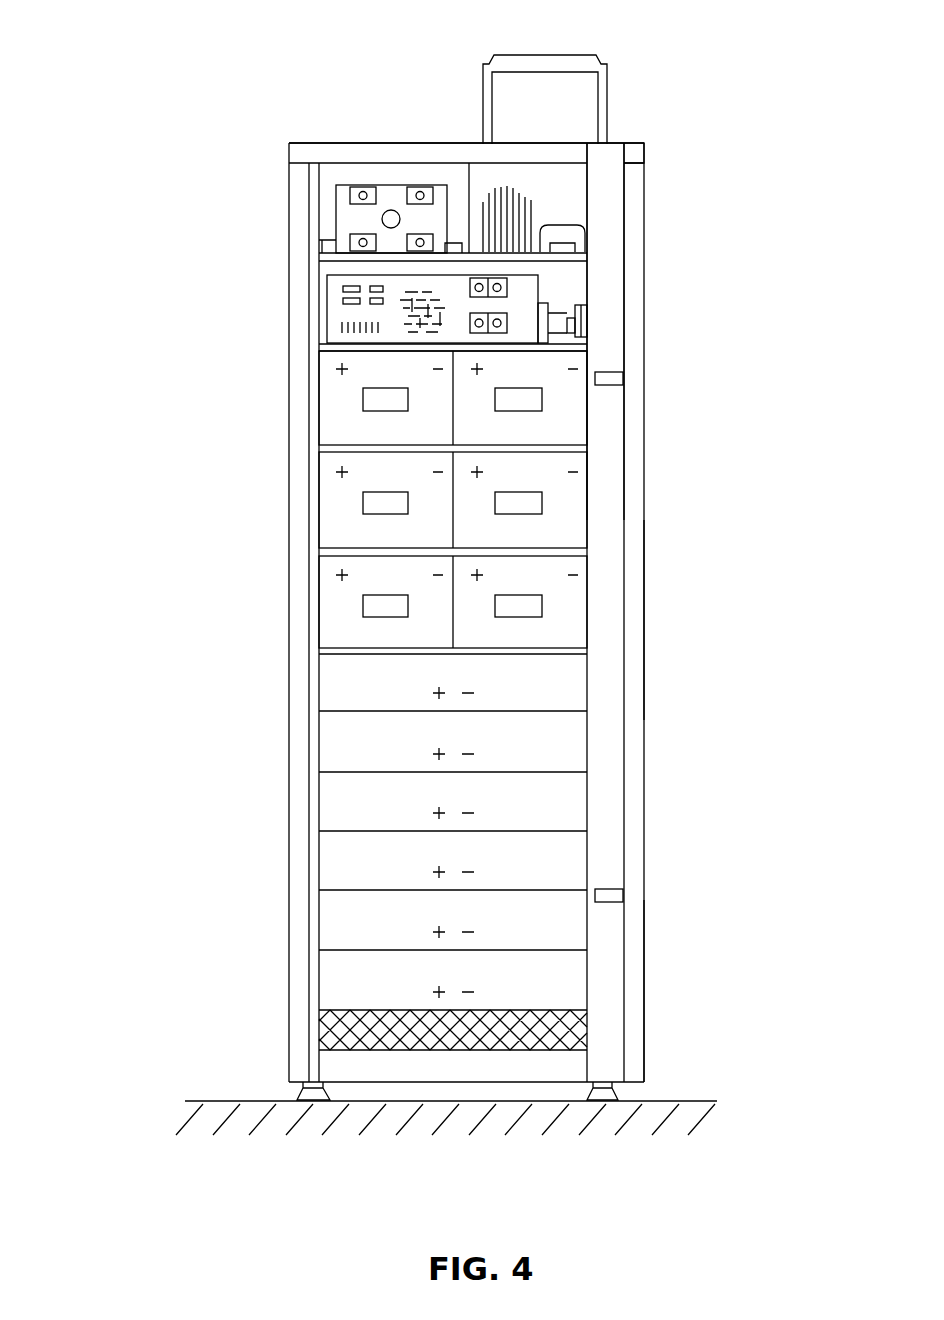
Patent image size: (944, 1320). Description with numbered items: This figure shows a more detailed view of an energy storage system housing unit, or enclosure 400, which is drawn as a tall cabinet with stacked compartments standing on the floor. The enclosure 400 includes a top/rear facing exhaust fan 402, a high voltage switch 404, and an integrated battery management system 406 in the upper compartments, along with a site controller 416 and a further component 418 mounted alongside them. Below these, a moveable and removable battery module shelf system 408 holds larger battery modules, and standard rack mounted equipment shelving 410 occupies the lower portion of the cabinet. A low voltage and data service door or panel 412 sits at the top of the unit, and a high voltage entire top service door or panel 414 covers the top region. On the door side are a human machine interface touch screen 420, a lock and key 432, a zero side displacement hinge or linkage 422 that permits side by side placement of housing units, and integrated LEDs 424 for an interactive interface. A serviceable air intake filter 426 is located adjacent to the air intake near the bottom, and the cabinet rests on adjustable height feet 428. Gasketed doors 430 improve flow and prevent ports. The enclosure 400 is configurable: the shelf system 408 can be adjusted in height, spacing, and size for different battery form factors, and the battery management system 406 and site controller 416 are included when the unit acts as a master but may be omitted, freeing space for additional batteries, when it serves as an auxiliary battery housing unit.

The energy storage system enclosure 400 is at (138, 68).
The exhaust fan 402 is at (378, 143).
The high voltage switch 404 is at (381, 216).
The integrated battery management system 406 is at (352, 303).
The battery module shelf system 408 is at (259, 365).
The rack mounted equipment shelving 410 is at (259, 658).
The low voltage and data service door 412 is at (545, 54).
The high voltage top service door 414 is at (644, 160).
The site controller 416 is at (572, 233).
The connector 418 is at (583, 312).
The human machine interface touch screen 420 is at (644, 487).
The zero side displacement hinge 422 is at (644, 672).
The integrated LEDs 424 is at (615, 900).
The serviceable air intake filter 426 is at (644, 980).
The adjustable height feet 428 is at (617, 1096).
The gasketed doors 430 is at (567, 1092).
The lock and key 432 is at (644, 580).